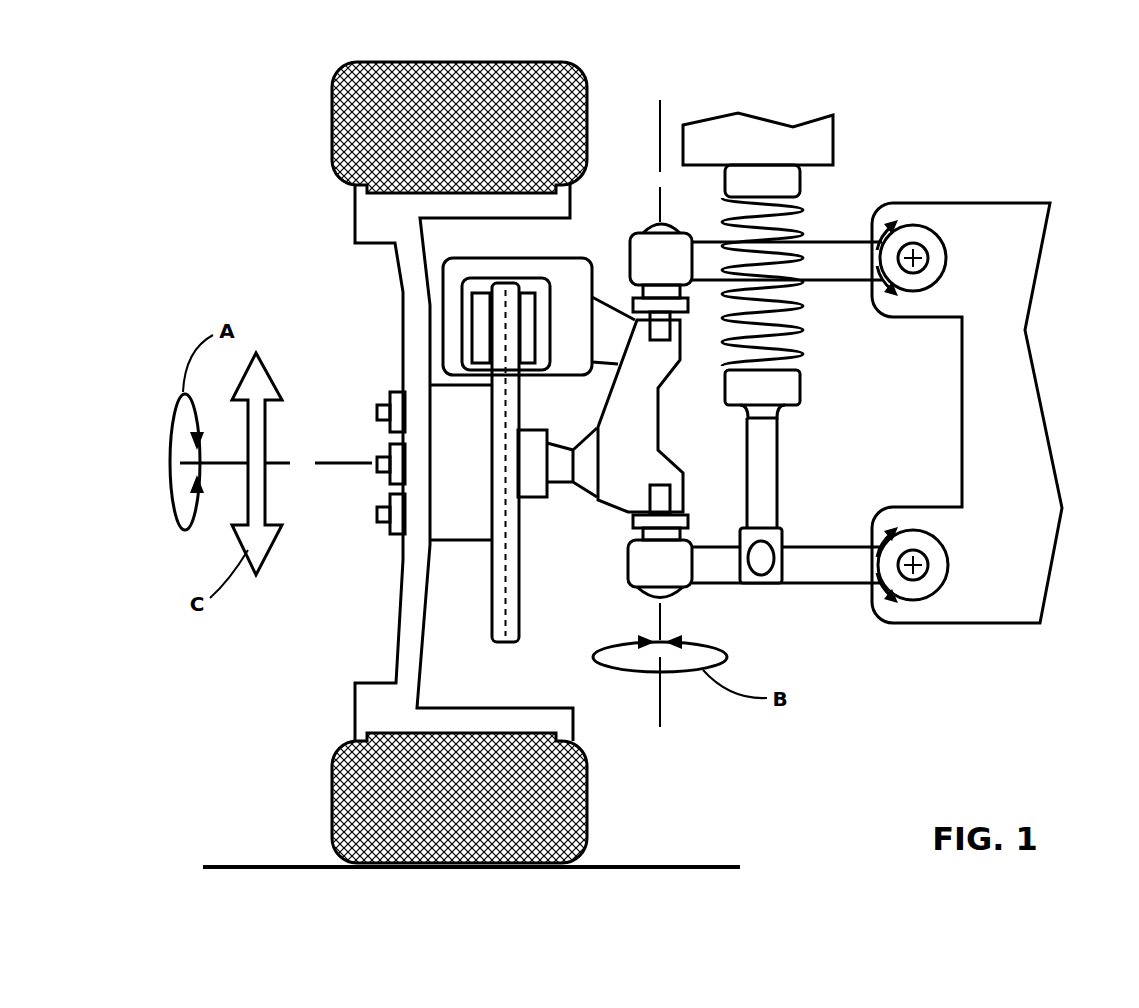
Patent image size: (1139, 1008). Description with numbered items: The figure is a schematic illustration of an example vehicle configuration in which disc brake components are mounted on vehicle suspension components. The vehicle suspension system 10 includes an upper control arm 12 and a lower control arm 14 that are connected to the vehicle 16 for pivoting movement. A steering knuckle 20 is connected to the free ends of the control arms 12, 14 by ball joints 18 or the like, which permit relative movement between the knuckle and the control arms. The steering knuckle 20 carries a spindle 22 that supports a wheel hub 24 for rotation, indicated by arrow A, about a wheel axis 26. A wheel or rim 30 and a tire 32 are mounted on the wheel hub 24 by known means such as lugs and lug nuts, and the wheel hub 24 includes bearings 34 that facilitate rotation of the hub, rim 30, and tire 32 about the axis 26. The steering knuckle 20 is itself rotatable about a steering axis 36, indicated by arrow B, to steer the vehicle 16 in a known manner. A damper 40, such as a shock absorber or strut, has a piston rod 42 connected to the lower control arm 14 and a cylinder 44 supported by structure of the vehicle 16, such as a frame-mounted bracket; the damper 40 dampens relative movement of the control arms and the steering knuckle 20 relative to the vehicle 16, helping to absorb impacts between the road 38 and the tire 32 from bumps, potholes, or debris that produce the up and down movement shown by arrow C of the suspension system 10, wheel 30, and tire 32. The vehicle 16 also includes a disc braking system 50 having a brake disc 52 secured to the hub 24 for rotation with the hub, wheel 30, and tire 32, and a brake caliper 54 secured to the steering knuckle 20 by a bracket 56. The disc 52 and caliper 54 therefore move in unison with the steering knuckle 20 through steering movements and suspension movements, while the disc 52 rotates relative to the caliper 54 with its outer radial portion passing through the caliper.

The vehicle suspension system 10 is at (943, 137).
The upper control arm 12 is at (822, 267).
The lower control arm 14 is at (795, 563).
The vehicle 16 is at (760, 137).
The ball joints 18 is at (672, 233).
The steering knuckle 20 is at (632, 425).
The spindle 22 is at (565, 470).
The wheel hub 24 is at (463, 498).
The wheel axis 26 is at (352, 462).
The wheel or rim 30 is at (408, 292).
The tire 32 is at (352, 163).
The bearings 34 is at (527, 480).
The steering axis 36 is at (663, 707).
The road 38 is at (290, 863).
The damper 40 is at (787, 390).
The piston rod 42 is at (765, 472).
The cylinder 44 is at (797, 345).
The disc braking system 50 is at (452, 240).
The brake disc 52 is at (490, 580).
The brake caliper 54 is at (570, 265).
The bracket 56 is at (605, 322).